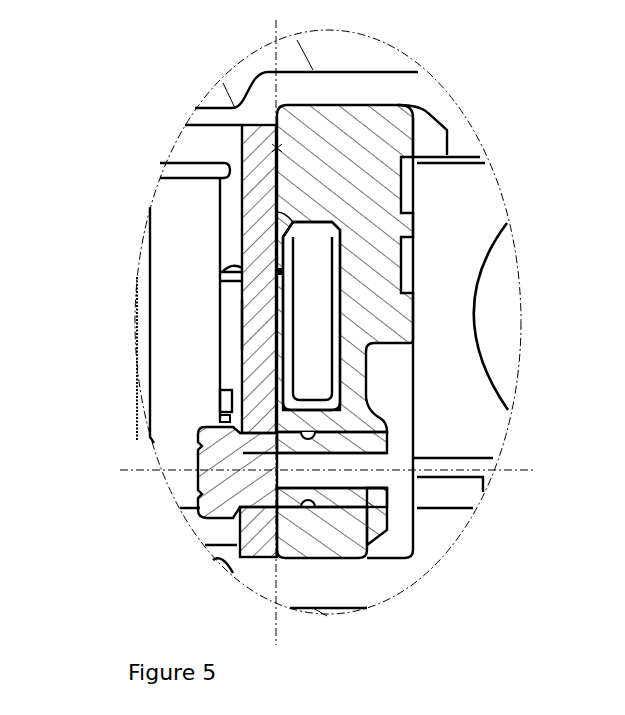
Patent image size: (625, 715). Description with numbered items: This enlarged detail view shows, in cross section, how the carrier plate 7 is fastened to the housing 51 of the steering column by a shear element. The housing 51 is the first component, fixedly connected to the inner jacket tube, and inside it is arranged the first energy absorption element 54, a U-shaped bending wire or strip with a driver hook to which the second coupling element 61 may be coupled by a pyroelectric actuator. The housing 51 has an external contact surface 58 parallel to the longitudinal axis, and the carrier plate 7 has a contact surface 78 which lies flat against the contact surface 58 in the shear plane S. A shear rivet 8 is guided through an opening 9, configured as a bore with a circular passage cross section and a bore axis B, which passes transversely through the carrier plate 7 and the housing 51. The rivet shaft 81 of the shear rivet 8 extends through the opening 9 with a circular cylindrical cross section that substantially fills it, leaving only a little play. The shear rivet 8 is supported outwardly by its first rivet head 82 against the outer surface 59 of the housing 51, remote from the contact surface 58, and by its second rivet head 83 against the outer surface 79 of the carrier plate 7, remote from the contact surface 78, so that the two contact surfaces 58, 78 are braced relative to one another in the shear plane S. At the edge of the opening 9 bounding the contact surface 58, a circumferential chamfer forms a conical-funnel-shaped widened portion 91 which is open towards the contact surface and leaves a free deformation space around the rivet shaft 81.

The shear plane S is at (272, 36).
The bore axis B is at (515, 470).
The carrier plate 7 is at (377, 157).
The contact surface 58 is at (279, 148).
The contact surface 78 is at (274, 150).
The housing 51 is at (196, 175).
The second coupling element 61 is at (310, 308).
The outer surface 59 is at (240, 323).
The first energy absorption element 54 is at (190, 360).
The conical-funnel-shaped widened portion 91 is at (243, 423).
The shear rivet 8 is at (247, 448).
The first rivet head 82 is at (232, 502).
The opening 9 is at (249, 512).
The rivet shaft 81 is at (333, 505).
The second rivet head 83 is at (385, 510).
The outer surface 79 is at (372, 372).